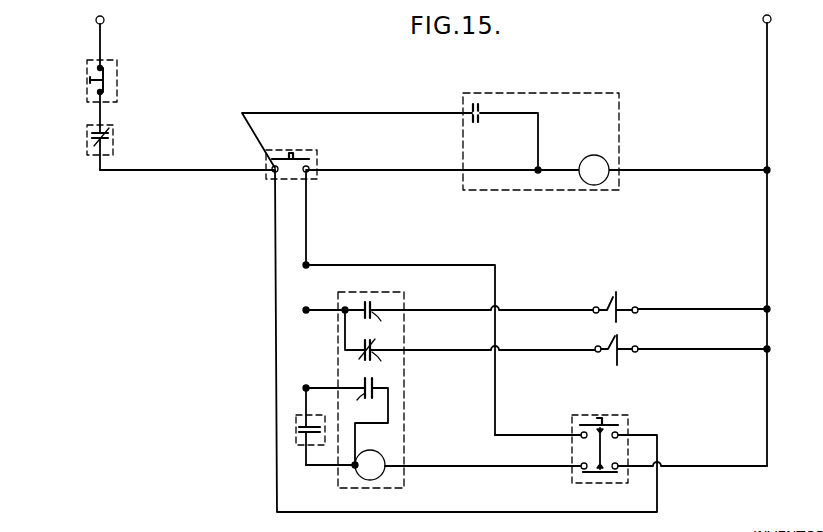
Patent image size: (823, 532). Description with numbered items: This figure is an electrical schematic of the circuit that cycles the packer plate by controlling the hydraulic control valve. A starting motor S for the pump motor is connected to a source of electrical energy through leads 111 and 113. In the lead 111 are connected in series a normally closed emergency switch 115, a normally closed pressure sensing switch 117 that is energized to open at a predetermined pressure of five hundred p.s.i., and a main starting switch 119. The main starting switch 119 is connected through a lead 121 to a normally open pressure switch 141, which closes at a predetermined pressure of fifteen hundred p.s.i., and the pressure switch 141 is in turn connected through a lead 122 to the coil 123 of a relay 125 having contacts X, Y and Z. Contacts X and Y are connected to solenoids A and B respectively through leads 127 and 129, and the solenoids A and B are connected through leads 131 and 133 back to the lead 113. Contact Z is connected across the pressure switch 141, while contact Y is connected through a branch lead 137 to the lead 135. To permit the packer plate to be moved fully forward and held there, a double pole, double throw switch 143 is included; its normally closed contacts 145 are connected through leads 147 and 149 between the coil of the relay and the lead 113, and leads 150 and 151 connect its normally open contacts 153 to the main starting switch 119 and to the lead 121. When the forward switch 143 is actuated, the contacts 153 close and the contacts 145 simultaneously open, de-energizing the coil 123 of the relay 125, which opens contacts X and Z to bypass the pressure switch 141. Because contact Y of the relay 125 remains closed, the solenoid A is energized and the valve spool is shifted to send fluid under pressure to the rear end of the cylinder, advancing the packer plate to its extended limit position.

The lead 111 is at (172, 168).
The lead 113 is at (767, 81).
The emergency switch 115 is at (141, 57).
The pressure sensing switch 117 is at (96, 155).
The main starting switch 119 is at (317, 157).
The lead 121 is at (307, 231).
The lead 122 is at (328, 468).
The coil 123 is at (373, 455).
The relay 125 is at (416, 414).
The lead 127 is at (538, 308).
The lead 129 is at (552, 351).
The lead 131 is at (700, 308).
The lead 133 is at (704, 338).
The lead 135 is at (321, 309).
The branch lead 137 is at (346, 343).
The pressure switch 141 is at (300, 447).
The double pole, double throw switch 143 is at (564, 456).
The normally closed contacts 145 is at (582, 469).
The lead 147 is at (448, 466).
The lead 149 is at (721, 465).
The lead 150 is at (277, 495).
The lead 151 is at (425, 251).
The normally open contacts 153 is at (618, 433).
The starting motor S is at (594, 155).
The solenoid A is at (618, 358).
The solenoid B is at (616, 297).